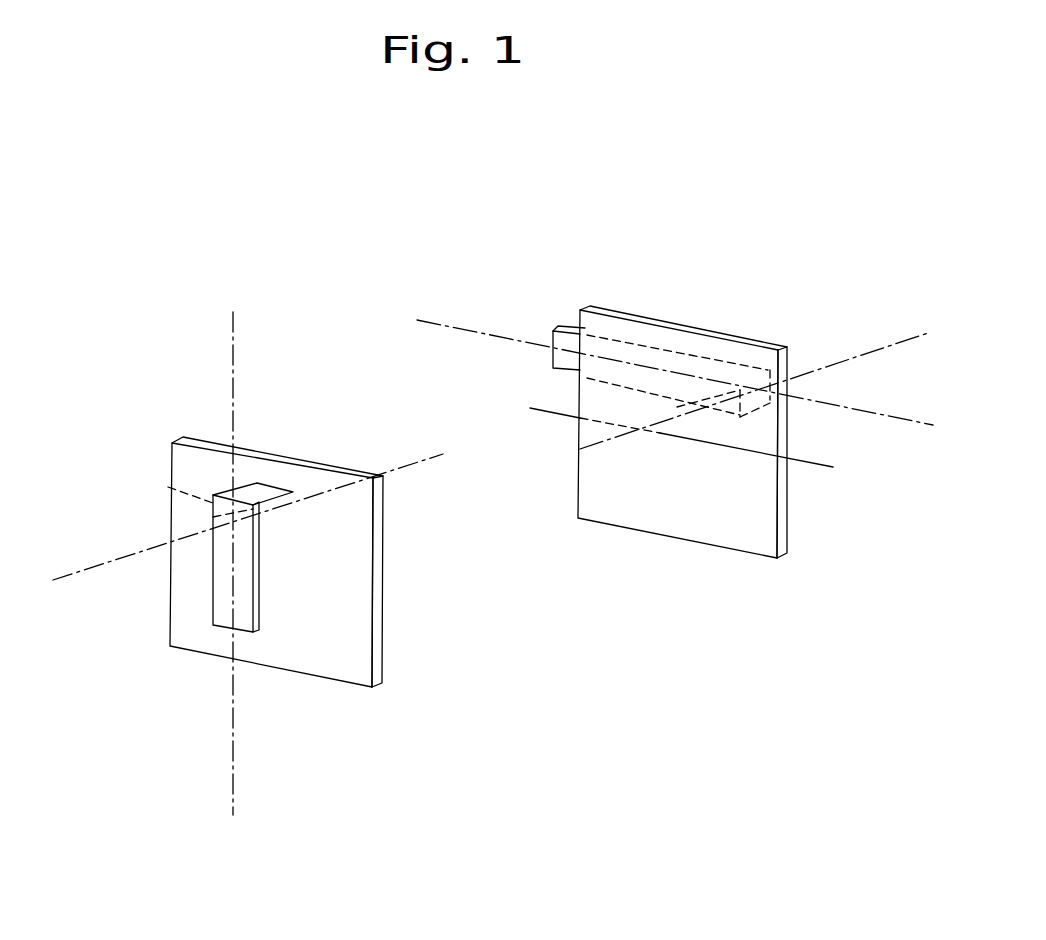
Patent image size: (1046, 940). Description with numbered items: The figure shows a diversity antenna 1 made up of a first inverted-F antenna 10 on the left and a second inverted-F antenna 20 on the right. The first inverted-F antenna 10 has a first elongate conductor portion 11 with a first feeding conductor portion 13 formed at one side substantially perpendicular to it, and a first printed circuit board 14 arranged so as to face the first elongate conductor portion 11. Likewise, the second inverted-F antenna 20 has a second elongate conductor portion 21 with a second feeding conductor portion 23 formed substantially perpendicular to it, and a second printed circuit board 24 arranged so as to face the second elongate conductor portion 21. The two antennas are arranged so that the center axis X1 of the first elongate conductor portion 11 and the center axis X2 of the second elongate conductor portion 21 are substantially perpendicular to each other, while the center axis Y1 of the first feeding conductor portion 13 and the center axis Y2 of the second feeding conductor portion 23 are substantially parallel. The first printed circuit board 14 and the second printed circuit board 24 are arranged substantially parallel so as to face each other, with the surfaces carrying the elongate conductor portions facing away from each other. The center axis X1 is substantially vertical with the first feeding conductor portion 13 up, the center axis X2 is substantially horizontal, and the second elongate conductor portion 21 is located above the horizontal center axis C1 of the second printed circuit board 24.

The diversity antenna 1 is at (444, 184).
The first inverted-F antenna 10 is at (285, 423).
The first elongate conductor portion 11 is at (220, 602).
The first feeding conductor portion 13 is at (168, 483).
The first printed circuit board 14 is at (375, 630).
The second inverted-F antenna 20 is at (690, 307).
The second elongate conductor portion 21 is at (563, 327).
The second feeding conductor portion 23 is at (712, 415).
The second printed circuit board 24 is at (790, 541).
The center axis of first elongate conductor portion X1 is at (233, 782).
The center axis of first feeding conductor portion Y1 is at (413, 462).
The center axis of second elongate conductor portion X2 is at (922, 421).
The center axis of second feeding conductor portion Y2 is at (892, 342).
The horizontal center axis of second printed circuit board C1 is at (833, 467).